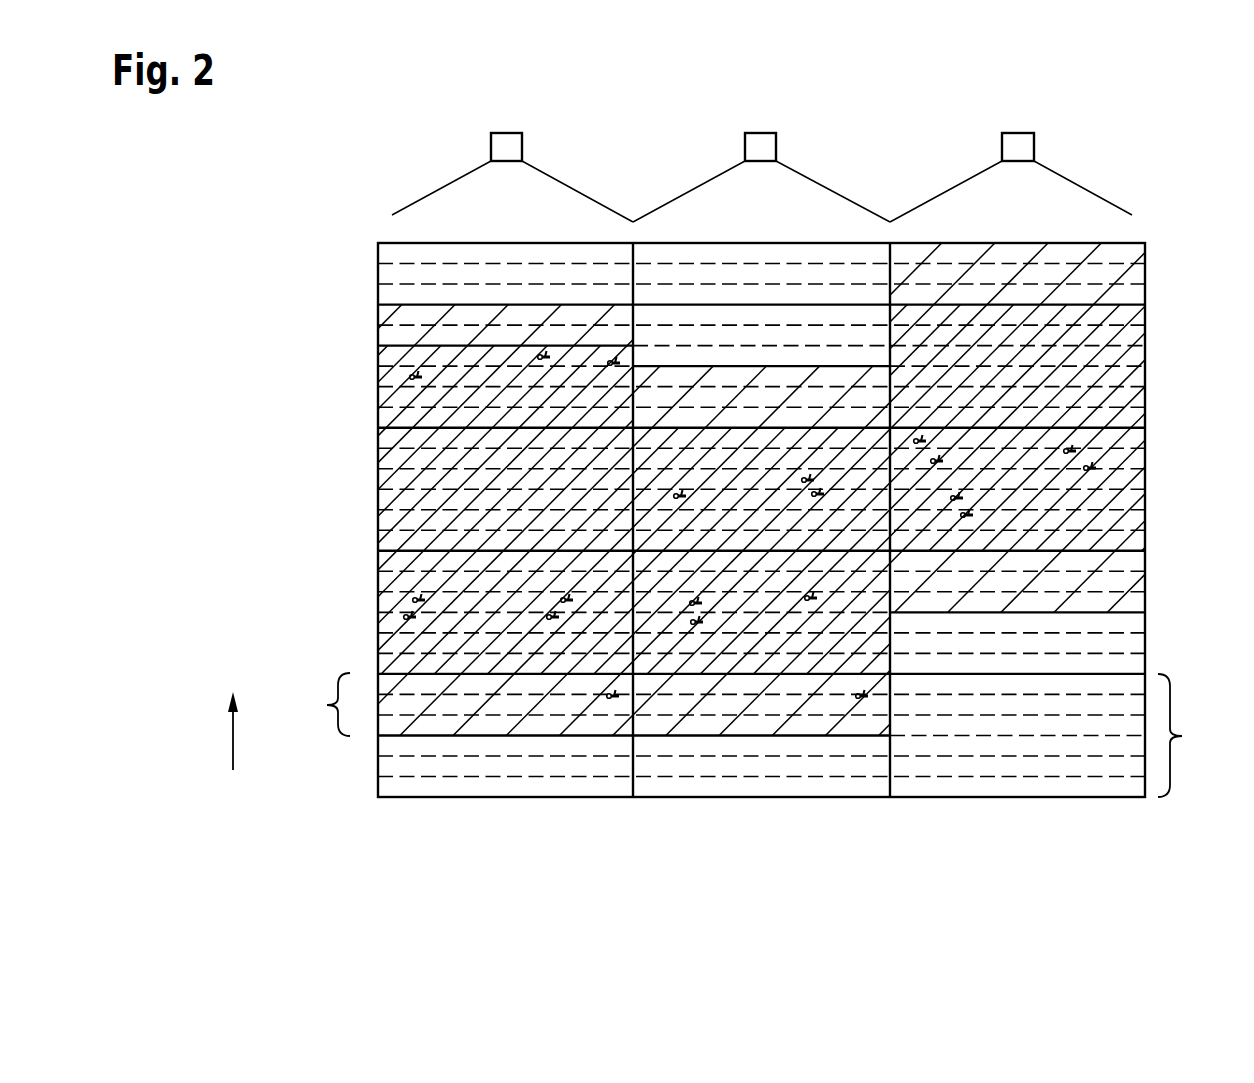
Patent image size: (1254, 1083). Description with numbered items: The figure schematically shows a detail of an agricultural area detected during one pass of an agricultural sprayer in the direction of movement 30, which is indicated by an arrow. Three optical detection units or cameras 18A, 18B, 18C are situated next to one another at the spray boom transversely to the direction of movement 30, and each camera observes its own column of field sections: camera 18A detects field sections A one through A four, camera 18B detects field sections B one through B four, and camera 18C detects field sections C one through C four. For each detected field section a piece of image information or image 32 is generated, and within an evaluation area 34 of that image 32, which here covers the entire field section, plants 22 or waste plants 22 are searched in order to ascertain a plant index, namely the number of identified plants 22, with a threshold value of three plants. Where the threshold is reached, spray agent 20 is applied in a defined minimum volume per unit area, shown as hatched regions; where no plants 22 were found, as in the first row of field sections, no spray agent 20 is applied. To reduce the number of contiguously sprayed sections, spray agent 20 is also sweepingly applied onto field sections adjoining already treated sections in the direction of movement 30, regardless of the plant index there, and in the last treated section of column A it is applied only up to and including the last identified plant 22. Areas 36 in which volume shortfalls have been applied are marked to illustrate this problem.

The optical detection unit 18A is at (491, 145).
The optical detection unit 18B is at (745, 145).
The optical detection unit 18C is at (1002, 145).
The spray agent 20 is at (415, 457).
The plant 22 is at (417, 597).
The direction of movement 30 is at (233, 740).
The image 32 is at (1108, 797).
The evaluation area 34 is at (1190, 735).
The area with volume shortfall 36 is at (321, 704).